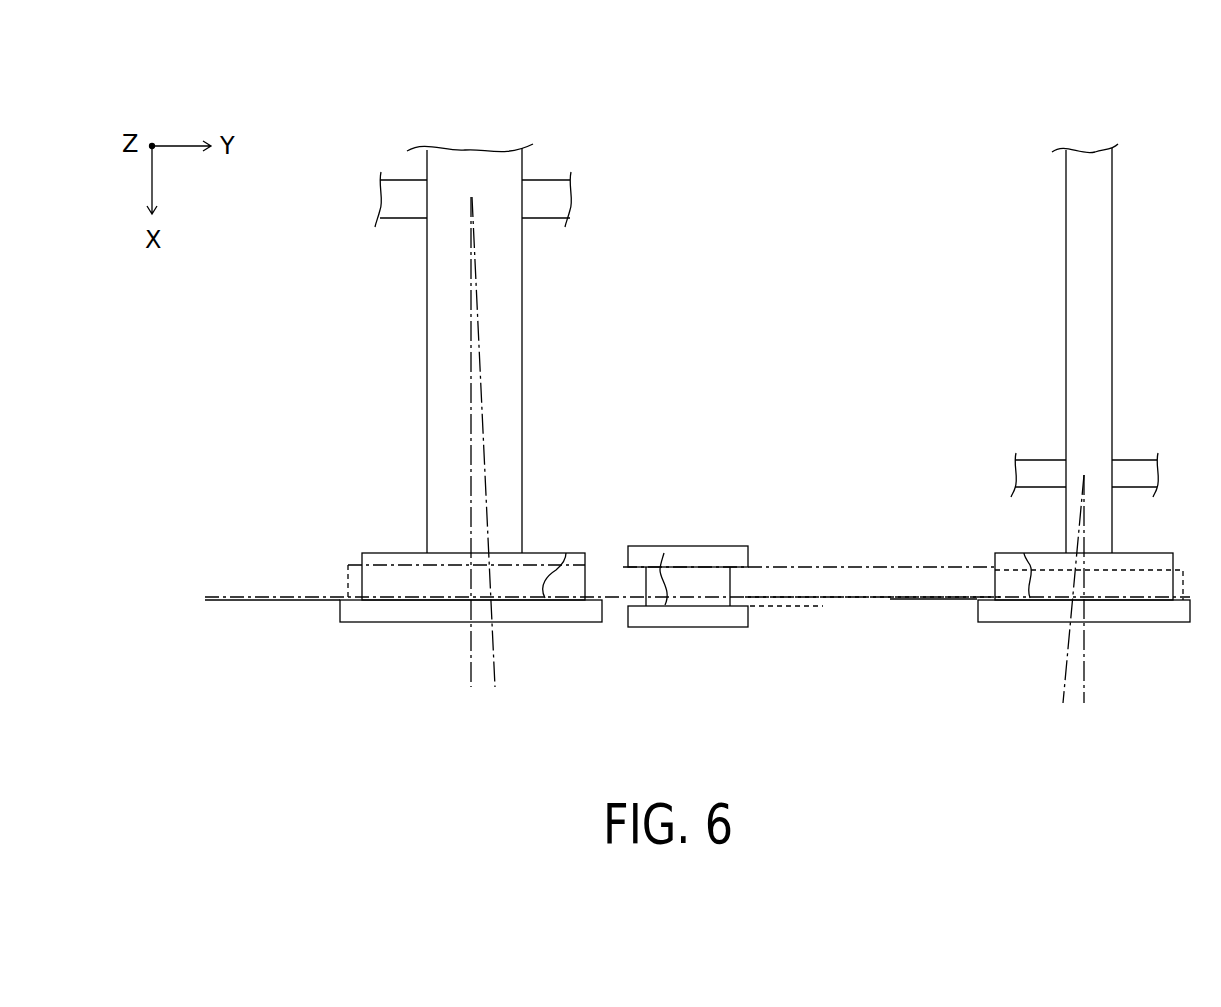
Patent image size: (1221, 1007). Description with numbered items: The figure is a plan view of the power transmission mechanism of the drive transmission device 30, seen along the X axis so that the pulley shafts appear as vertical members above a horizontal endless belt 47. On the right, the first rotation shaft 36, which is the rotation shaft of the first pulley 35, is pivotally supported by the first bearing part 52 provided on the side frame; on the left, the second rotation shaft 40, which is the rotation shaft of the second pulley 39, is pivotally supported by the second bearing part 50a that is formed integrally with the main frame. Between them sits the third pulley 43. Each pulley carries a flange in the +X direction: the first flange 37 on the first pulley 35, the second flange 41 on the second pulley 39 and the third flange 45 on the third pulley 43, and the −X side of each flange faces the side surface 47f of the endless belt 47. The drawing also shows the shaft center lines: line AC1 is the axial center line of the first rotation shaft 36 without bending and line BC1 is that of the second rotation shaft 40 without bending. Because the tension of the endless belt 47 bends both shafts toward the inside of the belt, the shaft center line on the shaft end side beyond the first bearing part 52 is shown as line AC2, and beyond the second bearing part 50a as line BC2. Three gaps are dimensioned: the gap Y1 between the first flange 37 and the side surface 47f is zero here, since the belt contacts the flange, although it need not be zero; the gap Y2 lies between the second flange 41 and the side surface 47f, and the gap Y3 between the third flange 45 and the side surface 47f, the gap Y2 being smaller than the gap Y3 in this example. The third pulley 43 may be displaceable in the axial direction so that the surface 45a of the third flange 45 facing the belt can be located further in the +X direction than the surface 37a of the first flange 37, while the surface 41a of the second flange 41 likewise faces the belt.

The drive transmission device 30 is at (238, 494).
The first pulley 35 is at (1155, 553).
The first rotation shaft 36 is at (1108, 365).
The first flange 37 is at (1158, 624).
The surface of the first flange 37a is at (1024, 553).
The second pulley 39 is at (378, 553).
The second rotation shaft 40 is at (438, 407).
The second flange 41 is at (365, 624).
The surface of the second flange 41a is at (560, 548).
The third pulley 43 is at (713, 575).
The third flange 45 is at (660, 628).
The surface of the third flange 45a is at (658, 548).
The endless belt 47 is at (875, 587).
The side surface of the endless belt 47f is at (900, 602).
The second bearing part 50a is at (538, 200).
The first bearing part 52 is at (1038, 466).
The axial center line of the first rotation shaft AC1 is at (1088, 683).
The shaft center line of the bent first rotation shaft AC2 is at (1066, 683).
The axial center line of the second rotation shaft BC1 is at (467, 665).
The shaft center line of the bent second rotation shaft BC2 is at (500, 665).
The gap between the first flange and the belt side surface Y1 is at (957, 578).
The gap between the second flange and the belt side surface Y2 is at (221, 562).
The gap between the third flange and the belt side surface Y3 is at (814, 577).